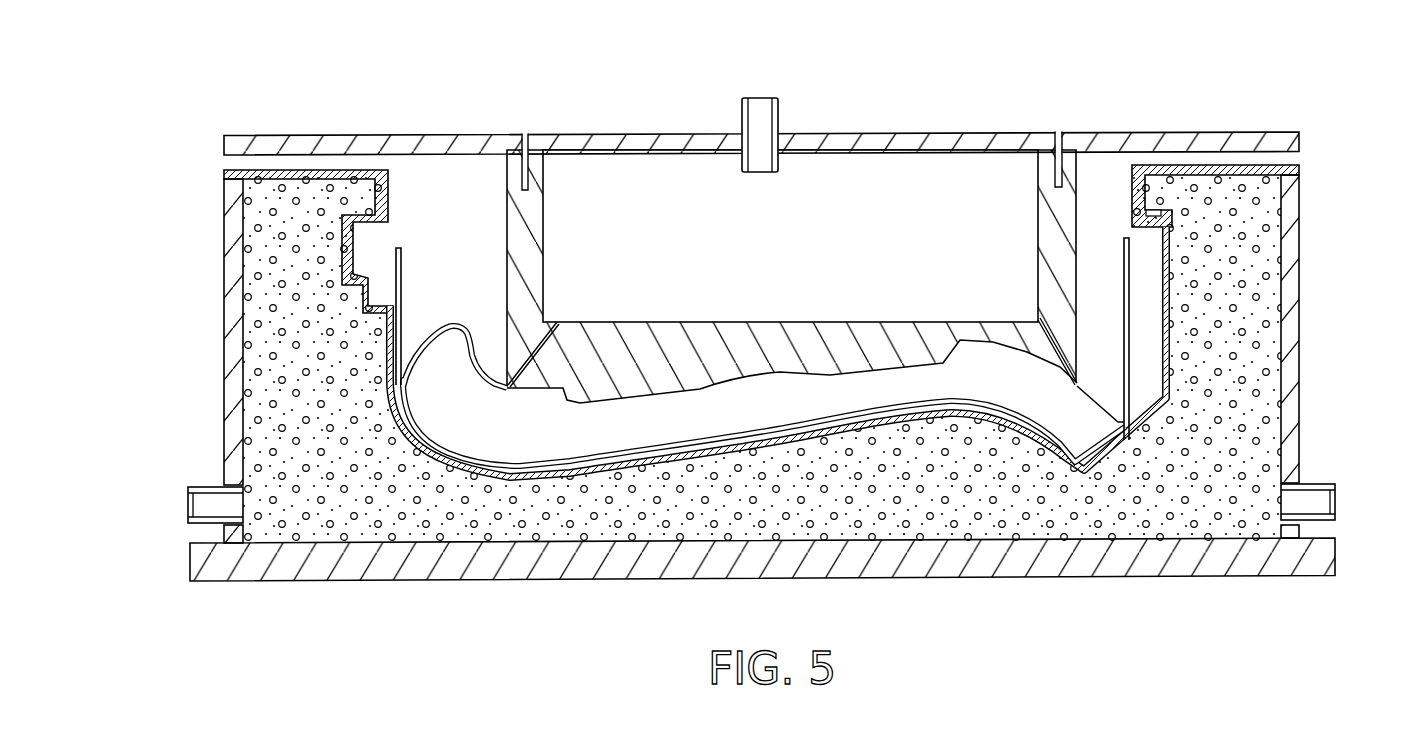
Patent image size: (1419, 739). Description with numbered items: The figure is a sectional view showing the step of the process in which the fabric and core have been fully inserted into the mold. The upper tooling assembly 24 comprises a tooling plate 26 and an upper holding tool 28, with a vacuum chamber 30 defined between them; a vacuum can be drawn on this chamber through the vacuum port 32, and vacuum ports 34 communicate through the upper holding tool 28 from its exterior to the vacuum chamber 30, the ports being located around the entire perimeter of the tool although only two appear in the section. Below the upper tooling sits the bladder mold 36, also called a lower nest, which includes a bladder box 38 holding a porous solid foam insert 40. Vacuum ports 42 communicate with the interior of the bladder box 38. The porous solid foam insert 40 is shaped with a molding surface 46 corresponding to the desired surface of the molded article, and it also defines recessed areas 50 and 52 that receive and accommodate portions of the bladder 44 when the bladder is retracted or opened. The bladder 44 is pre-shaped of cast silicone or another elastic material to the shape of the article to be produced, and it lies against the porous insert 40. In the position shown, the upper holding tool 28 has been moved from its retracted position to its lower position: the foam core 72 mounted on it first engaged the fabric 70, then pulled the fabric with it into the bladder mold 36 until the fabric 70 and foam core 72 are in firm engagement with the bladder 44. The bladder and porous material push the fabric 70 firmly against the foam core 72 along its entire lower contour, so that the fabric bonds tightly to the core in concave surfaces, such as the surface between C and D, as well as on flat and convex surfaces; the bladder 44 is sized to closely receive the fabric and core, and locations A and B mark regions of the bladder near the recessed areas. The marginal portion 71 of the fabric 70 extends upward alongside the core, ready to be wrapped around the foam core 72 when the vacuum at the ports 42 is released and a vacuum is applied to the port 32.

The upper tooling assembly 24 is at (673, 233).
The tooling plate 26 is at (270, 135).
The upper holding tool 28 is at (1060, 298).
The vacuum chamber 30 is at (810, 247).
The vacuum port 32 is at (742, 115).
The vacuum ports 34 is at (557, 322).
The bladder mold 36 is at (725, 365).
The bladder box 38 is at (224, 345).
The porous solid foam insert 40 is at (1282, 408).
The vacuum ports 42 is at (190, 519).
The bladder 44 is at (388, 187).
The molding surface 46 is at (875, 430).
The recessed area 50 is at (376, 244).
The recessed area 52 is at (1148, 220).
The fabric 70 is at (717, 438).
The marginal portion 71 is at (402, 277).
The foam core 72 is at (1023, 388).
The location A is at (345, 215).
The location B is at (343, 282).
The concave surface location C is at (492, 472).
The concave surface location D is at (1087, 478).